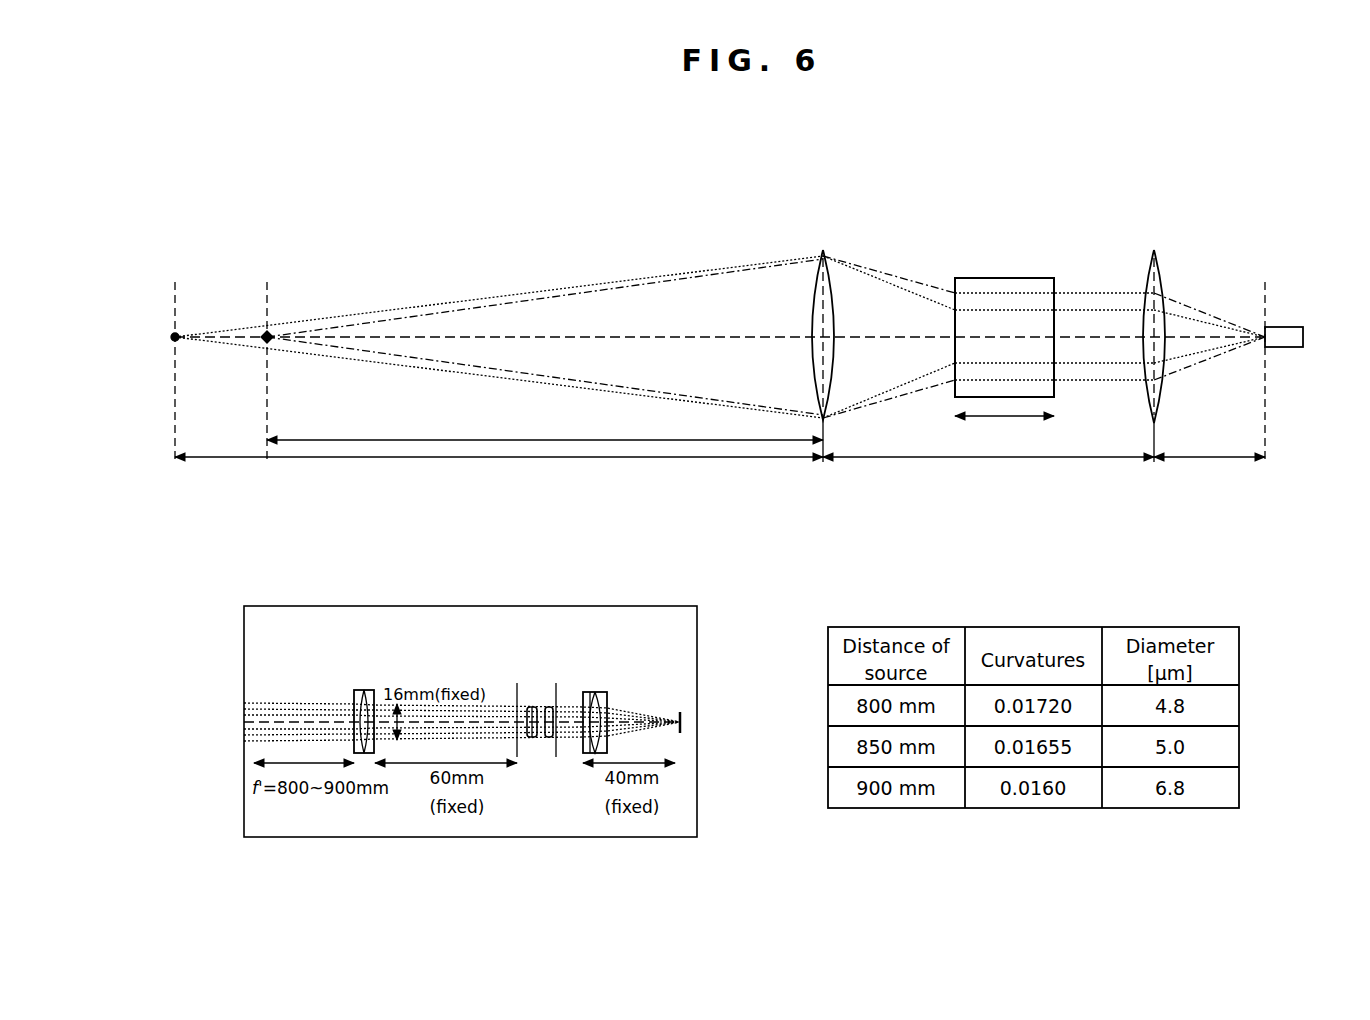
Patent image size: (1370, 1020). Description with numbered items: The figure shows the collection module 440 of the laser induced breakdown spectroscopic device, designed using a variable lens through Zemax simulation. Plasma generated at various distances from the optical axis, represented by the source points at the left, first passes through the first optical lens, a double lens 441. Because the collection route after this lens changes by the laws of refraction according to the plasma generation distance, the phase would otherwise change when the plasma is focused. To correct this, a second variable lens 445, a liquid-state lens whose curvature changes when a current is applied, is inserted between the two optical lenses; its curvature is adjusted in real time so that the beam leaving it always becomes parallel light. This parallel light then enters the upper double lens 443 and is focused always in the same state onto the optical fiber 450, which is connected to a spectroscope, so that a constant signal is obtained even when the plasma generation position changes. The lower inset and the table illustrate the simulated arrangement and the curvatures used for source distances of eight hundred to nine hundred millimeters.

The collection module 440 is at (248, 182).
The double lens 441 is at (828, 251).
The double lens 443 is at (1162, 275).
The second variable lens 445 is at (1032, 278).
The optical fiber 450 is at (1283, 347).